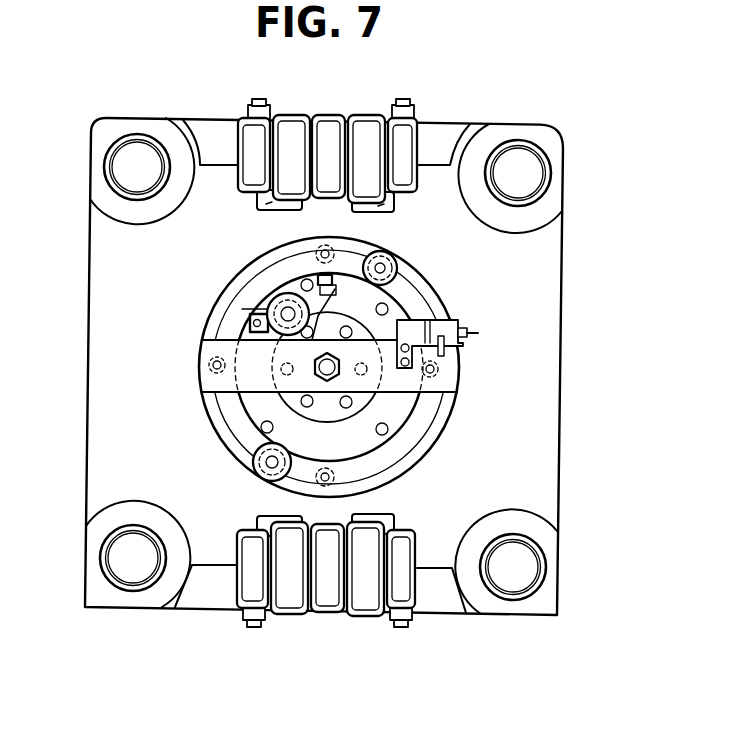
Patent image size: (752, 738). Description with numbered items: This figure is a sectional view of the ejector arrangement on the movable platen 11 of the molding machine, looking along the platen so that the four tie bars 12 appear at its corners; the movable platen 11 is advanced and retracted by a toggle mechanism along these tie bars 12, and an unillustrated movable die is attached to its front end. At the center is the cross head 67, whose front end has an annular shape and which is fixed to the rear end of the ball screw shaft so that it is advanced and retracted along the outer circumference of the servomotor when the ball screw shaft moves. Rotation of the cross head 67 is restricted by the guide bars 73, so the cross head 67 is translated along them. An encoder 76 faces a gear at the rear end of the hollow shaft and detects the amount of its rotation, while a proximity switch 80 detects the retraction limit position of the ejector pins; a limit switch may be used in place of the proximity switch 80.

The movable platen 11 is at (561, 345).
The tie bars 12 is at (542, 153).
The cross head 67 is at (443, 430).
The guide bars 73 is at (258, 472).
The encoder 76 is at (268, 300).
The proximity switch 80 is at (450, 318).